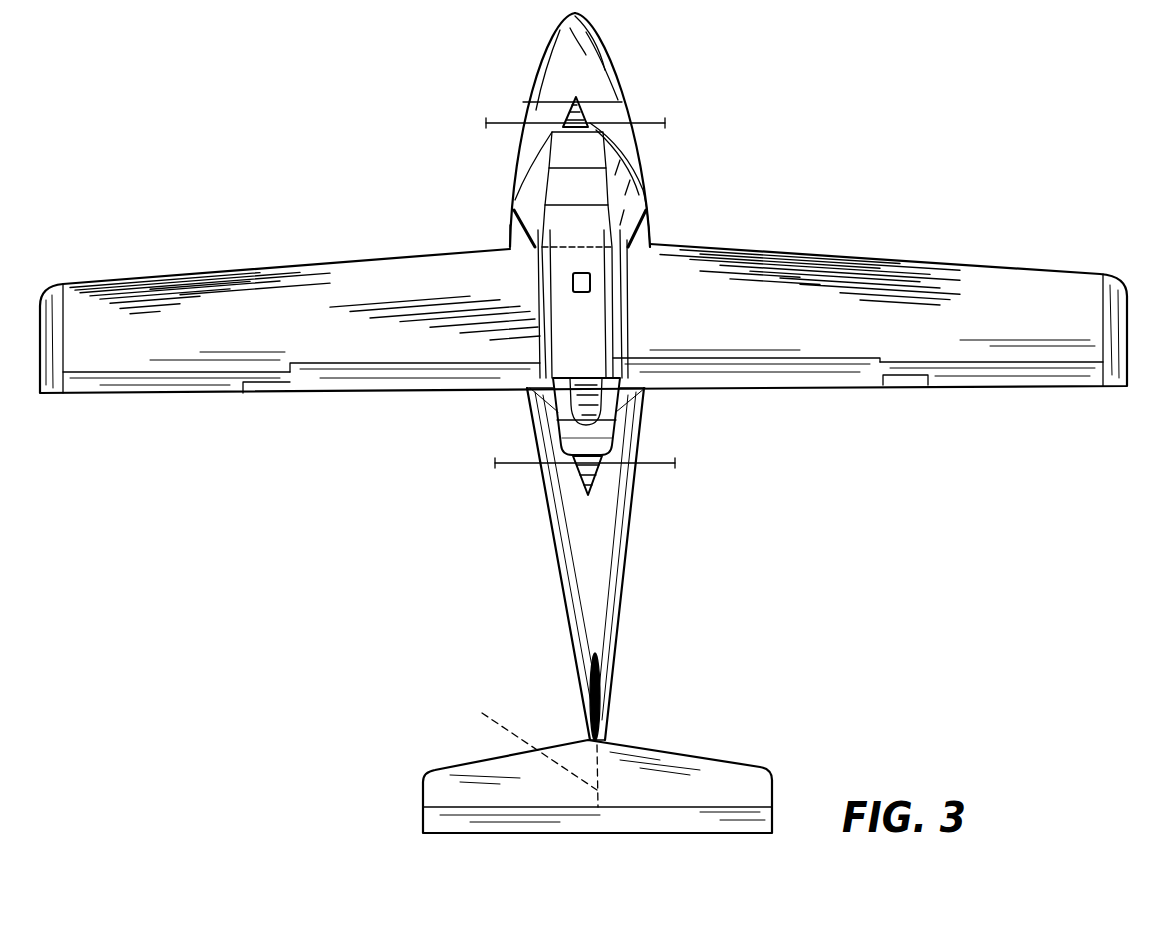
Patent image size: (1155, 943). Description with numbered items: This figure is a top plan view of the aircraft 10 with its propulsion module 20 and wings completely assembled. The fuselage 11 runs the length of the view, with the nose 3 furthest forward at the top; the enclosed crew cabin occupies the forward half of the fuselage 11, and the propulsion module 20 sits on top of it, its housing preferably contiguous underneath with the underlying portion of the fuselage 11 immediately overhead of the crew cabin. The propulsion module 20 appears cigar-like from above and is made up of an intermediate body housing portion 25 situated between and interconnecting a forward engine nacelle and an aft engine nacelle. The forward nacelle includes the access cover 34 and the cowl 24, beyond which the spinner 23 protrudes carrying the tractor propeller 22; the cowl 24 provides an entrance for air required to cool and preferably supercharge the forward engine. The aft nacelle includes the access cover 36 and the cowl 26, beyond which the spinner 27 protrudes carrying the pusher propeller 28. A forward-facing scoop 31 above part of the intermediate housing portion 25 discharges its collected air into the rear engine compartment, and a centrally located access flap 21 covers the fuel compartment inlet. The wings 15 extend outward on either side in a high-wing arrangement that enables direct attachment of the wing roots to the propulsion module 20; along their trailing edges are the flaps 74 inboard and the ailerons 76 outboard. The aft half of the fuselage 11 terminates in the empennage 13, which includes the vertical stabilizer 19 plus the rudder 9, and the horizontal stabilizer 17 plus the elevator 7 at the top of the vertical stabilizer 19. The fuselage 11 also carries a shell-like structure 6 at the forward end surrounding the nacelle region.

The nose 3 is at (560, 43).
The fuselage shell inner rim 6 is at (630, 190).
The elevator 7 is at (440, 825).
The rudder 9 is at (482, 713).
The aircraft 10 is at (405, 497).
The fuselage 11 is at (510, 237).
The empennage 13 is at (600, 745).
The wing 15 is at (935, 278).
The horizontal stabilizer 17 is at (435, 775).
The vertical stabilizer 19 is at (592, 696).
The propulsion module 20 is at (442, 280).
The access flap 21 is at (592, 278).
The tractor propeller 22 is at (650, 123).
The spinner 23 is at (573, 113).
The cowl 24 is at (563, 145).
The intermediate body housing portion 25 is at (585, 333).
The cowl 26 is at (577, 438).
The spinner 27 is at (582, 480).
The pusher propeller 28 is at (660, 466).
The forward-facing scoop 31 is at (600, 443).
The access cover 34 is at (563, 187).
The access cover 36 is at (607, 398).
The flap 74 is at (848, 380).
The aileron 76 is at (1060, 380).